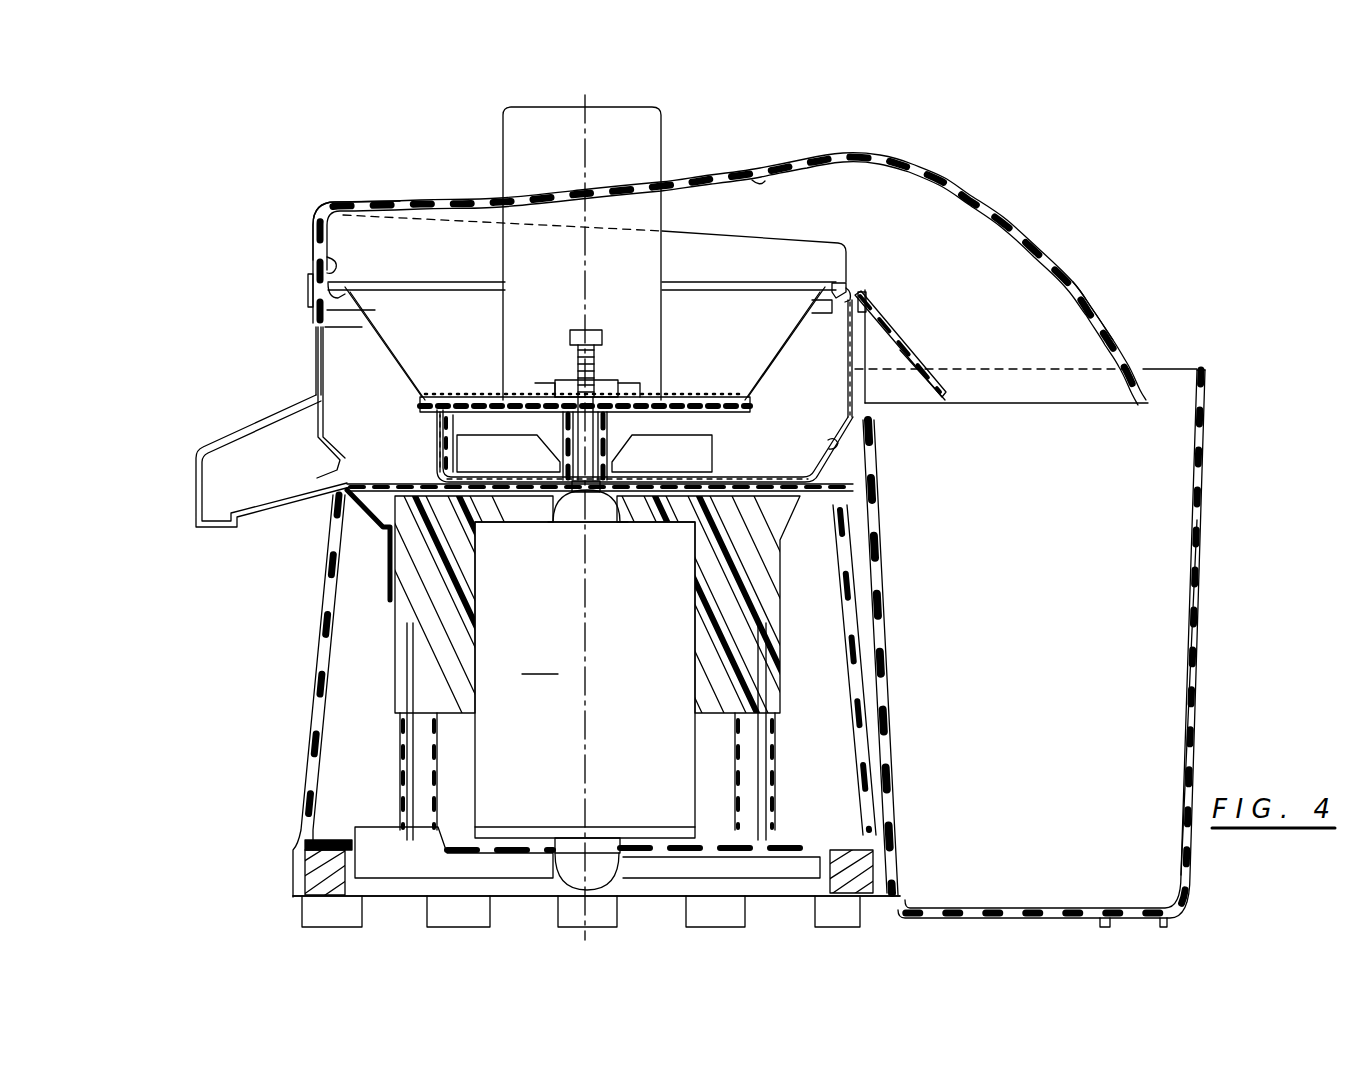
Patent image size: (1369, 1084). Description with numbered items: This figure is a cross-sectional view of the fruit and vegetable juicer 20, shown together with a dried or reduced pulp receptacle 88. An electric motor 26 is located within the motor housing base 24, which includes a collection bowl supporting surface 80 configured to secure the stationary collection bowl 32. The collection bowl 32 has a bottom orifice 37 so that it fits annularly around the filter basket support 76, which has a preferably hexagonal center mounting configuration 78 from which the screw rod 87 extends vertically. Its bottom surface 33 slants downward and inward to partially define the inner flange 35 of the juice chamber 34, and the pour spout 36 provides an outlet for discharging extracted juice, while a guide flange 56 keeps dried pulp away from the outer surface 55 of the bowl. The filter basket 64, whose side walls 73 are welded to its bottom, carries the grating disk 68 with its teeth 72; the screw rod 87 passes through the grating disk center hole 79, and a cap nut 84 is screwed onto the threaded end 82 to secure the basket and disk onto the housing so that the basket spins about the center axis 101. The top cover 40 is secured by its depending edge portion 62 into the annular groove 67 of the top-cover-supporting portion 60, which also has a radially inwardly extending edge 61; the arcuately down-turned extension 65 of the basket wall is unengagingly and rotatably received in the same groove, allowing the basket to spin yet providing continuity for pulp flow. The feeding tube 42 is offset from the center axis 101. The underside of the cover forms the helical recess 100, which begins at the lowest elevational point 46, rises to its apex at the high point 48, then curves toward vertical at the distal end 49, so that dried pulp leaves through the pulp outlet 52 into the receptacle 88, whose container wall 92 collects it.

The fruit and vegetable juicer 20 is at (206, 760).
The motor housing base 24 is at (323, 640).
The electric motor 26 is at (595, 711).
The collection bowl 32 is at (305, 383).
The bottom surface of the collection bowl 33 is at (828, 468).
The juice chamber 34 is at (818, 413).
The inner flange of the juice chamber 35 is at (835, 445).
The pour spout 36 is at (200, 478).
The bottom orifice 37 is at (716, 397).
The top cover 40 is at (312, 198).
The feeding tube 42 is at (505, 128).
The lowest elevational point 46 is at (762, 242).
The high point 48 is at (945, 182).
The distal end of the top cover helical path 49 is at (1140, 367).
The pulp outlet 52 is at (1072, 332).
The outer surface of the collection bowl 55 is at (885, 372).
The guide flange 56 is at (922, 365).
The top-cover-supporting portion 60 is at (310, 300).
The radially inwardly extending edge 61 is at (352, 312).
The depending edge portion 62 is at (330, 268).
The filter basket 64 is at (372, 338).
The arcuately down-turned extension 65 is at (833, 283).
The annular groove 67 is at (338, 290).
The grating disk 68 is at (422, 396).
The grating teeth 72 is at (478, 396).
The side walls 73 is at (790, 356).
The filter basket support 76 is at (440, 445).
The center mounting configuration 78 is at (562, 380).
The grating disk center hole 79 is at (612, 390).
The collection bowl supporting surface 80 is at (357, 512).
The threaded end 82 is at (600, 365).
The cap nut 84 is at (578, 330).
The screw rod 87 is at (588, 462).
The pulp receptacle 88 is at (1200, 532).
The container wall 92 is at (1148, 683).
The helical recess 100 is at (760, 182).
The center axis 101 is at (585, 148).